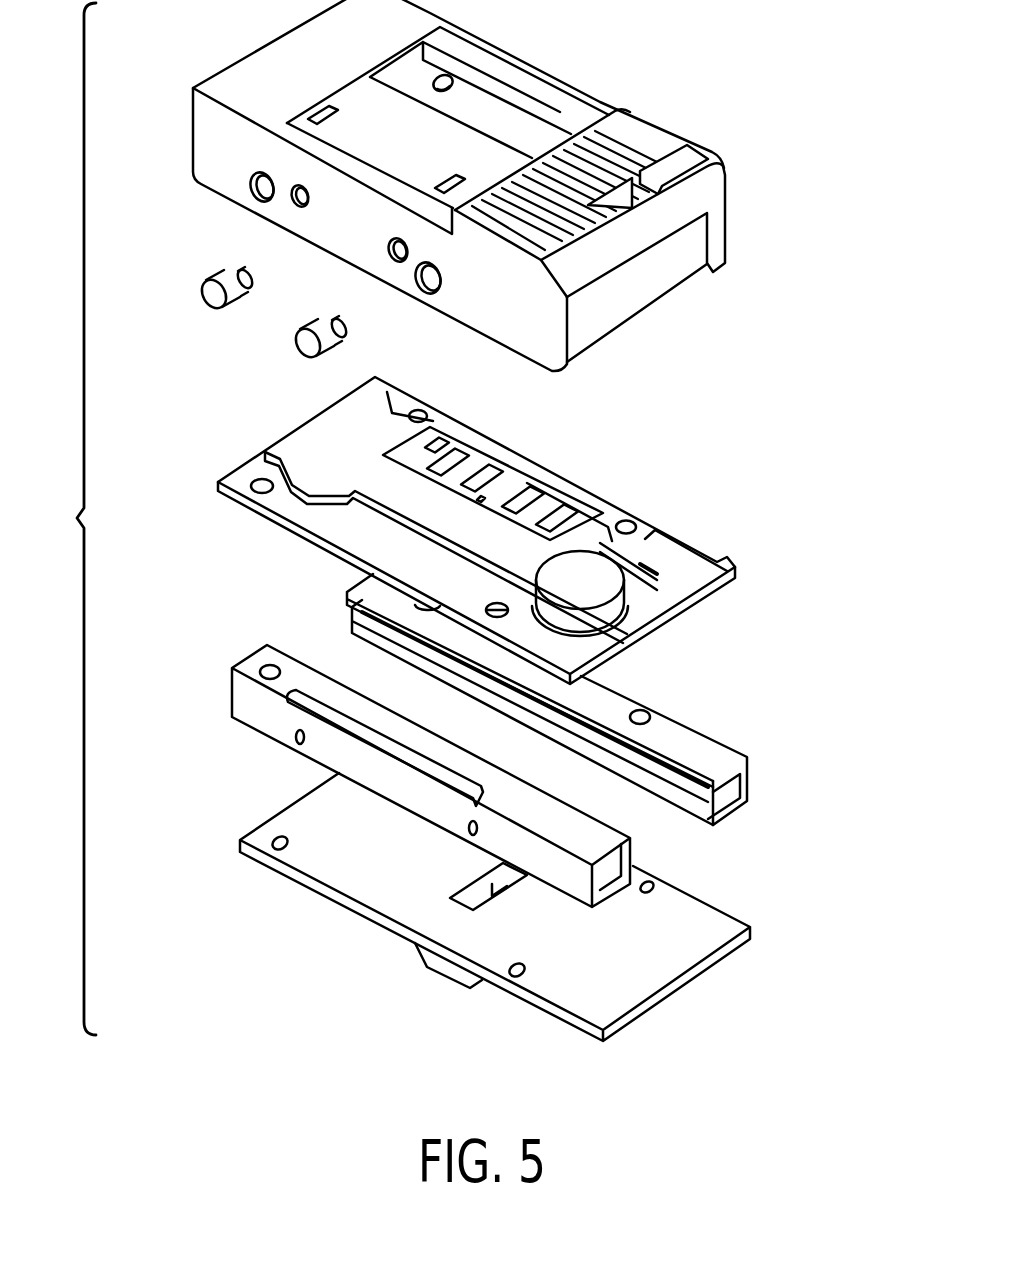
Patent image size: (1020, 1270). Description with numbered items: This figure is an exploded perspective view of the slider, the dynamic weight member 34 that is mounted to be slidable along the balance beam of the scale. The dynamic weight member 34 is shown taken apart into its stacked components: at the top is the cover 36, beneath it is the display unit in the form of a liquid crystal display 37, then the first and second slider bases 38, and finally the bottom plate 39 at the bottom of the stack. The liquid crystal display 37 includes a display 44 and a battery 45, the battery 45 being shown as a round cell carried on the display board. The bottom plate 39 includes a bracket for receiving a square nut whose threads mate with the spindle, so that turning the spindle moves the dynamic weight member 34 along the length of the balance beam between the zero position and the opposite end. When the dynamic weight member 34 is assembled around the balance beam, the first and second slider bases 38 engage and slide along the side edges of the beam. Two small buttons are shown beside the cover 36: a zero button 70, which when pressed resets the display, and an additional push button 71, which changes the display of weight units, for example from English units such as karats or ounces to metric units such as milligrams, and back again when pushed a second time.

The dynamic weight member 34 is at (783, 927).
The cover 36 is at (570, 88).
The liquid crystal display 37 is at (713, 560).
The first and second slider bases 38 is at (740, 780).
The bottom plate 39 is at (660, 1007).
The display 44 is at (527, 495).
The battery 45 is at (590, 600).
The zero button 70 is at (207, 280).
The push button 71 is at (293, 345).